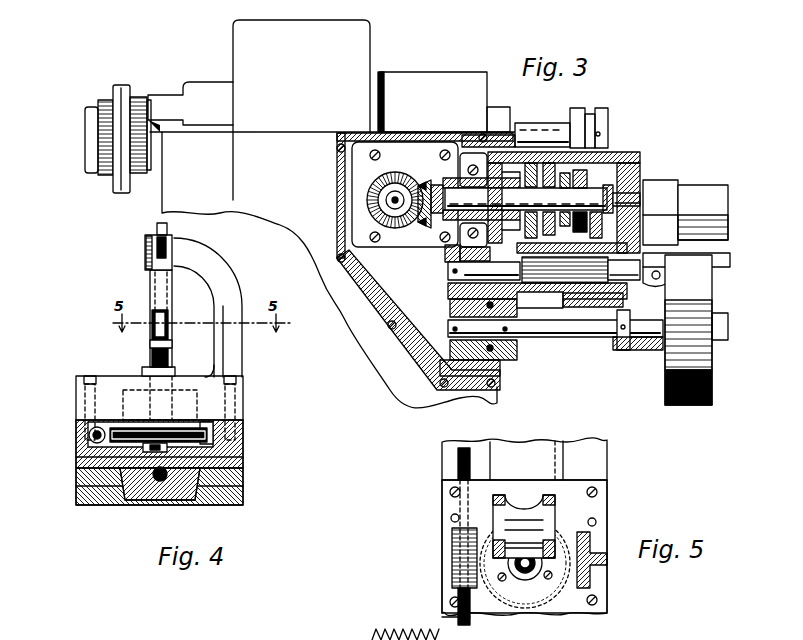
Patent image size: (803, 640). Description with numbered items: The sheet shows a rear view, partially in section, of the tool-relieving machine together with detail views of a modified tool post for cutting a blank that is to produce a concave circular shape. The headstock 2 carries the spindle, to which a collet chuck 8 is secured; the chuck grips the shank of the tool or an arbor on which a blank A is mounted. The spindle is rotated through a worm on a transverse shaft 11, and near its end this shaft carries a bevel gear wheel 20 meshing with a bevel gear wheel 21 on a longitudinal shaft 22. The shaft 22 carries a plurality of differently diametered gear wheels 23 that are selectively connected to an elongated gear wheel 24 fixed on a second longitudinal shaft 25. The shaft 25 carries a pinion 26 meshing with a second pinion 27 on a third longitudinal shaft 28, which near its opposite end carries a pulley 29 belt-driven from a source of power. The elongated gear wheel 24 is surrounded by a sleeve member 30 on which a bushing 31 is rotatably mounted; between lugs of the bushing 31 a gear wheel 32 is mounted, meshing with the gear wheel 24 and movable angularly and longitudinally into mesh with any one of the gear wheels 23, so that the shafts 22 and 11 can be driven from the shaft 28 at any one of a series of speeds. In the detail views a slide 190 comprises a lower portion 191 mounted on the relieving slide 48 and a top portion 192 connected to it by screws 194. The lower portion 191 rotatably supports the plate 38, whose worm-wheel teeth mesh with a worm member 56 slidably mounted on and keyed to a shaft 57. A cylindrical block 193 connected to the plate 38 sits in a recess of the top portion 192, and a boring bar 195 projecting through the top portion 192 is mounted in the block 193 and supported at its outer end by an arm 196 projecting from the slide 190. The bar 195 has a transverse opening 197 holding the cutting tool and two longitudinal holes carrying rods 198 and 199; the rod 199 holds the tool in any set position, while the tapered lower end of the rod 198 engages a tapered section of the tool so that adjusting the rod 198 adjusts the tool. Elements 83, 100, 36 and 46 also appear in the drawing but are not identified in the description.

In FIG. 3, the headstock 2 is at (410, 58).
In FIG. 3, the collet chuck 8 is at (86, 106).
In FIG. 3, the transverse rotatable shaft 11 is at (398, 194).
In FIG. 3, the bevel gear wheel 20 is at (410, 232).
In FIG. 3, the bevel gear wheel 21 is at (428, 184).
In FIG. 3, the longitudinal shaft 22 is at (641, 192).
In FIG. 3, the differently diametered gear wheels 23 is at (575, 178).
In FIG. 3, the elongated gear wheel 24 is at (450, 276).
In FIG. 3, the longitudinal shaft 25 is at (668, 268).
In FIG. 3, the pinion 26 is at (460, 256).
In FIG. 3, the second pinion 27 is at (450, 310).
In FIG. 3, the third longitudinal shaft 28 is at (576, 340).
In FIG. 3, the pulley 29 is at (713, 382).
In FIG. 3, the sleeve member 30 is at (522, 304).
In FIG. 3, the bushing 31 is at (577, 302).
In FIG. 3, the gear wheel 32 is at (652, 222).
In FIG. 3, the shaft 83 is at (532, 126).
In FIG. 3, the knob 100 is at (602, 112).
In FIG. 4, the toothed rack 36 is at (78, 455).
In FIG. 5, the plate 38 is at (548, 598).
In FIG. 5, the gear 46 is at (374, 636).
In FIG. 4, the relieving slide 48 is at (243, 482).
In FIG. 5, the relieving slide 48 is at (607, 456).
In FIG. 5, the worm member 56 is at (452, 570).
In FIG. 5, the shaft 57 is at (458, 617).
In FIG. 4, the slide 190 is at (312, 440).
In FIG. 4, the lower portion 191 is at (243, 460).
In FIG. 4, the top portion 192 is at (243, 390).
In FIG. 5, the top portion 192 is at (603, 585).
In FIG. 4, the cylindrical block 193 is at (132, 395).
In FIG. 4, the screws 194 is at (85, 401).
In FIG. 5, the screws 194 is at (449, 492).
In FIG. 4, the boring bar 195 is at (166, 294).
In FIG. 4, the arm 196 is at (207, 256).
In FIG. 5, the arm 196 is at (592, 546).
In FIG. 4, the transverse opening 197 is at (172, 336).
In FIG. 4, the rod 198 is at (150, 292).
In FIG. 5, the rod 198 is at (520, 575).
In FIG. 4, the rod 199 is at (156, 228).
In FIG. 5, the rod 199 is at (528, 572).
In FIG. 5, the blank A is at (550, 502).